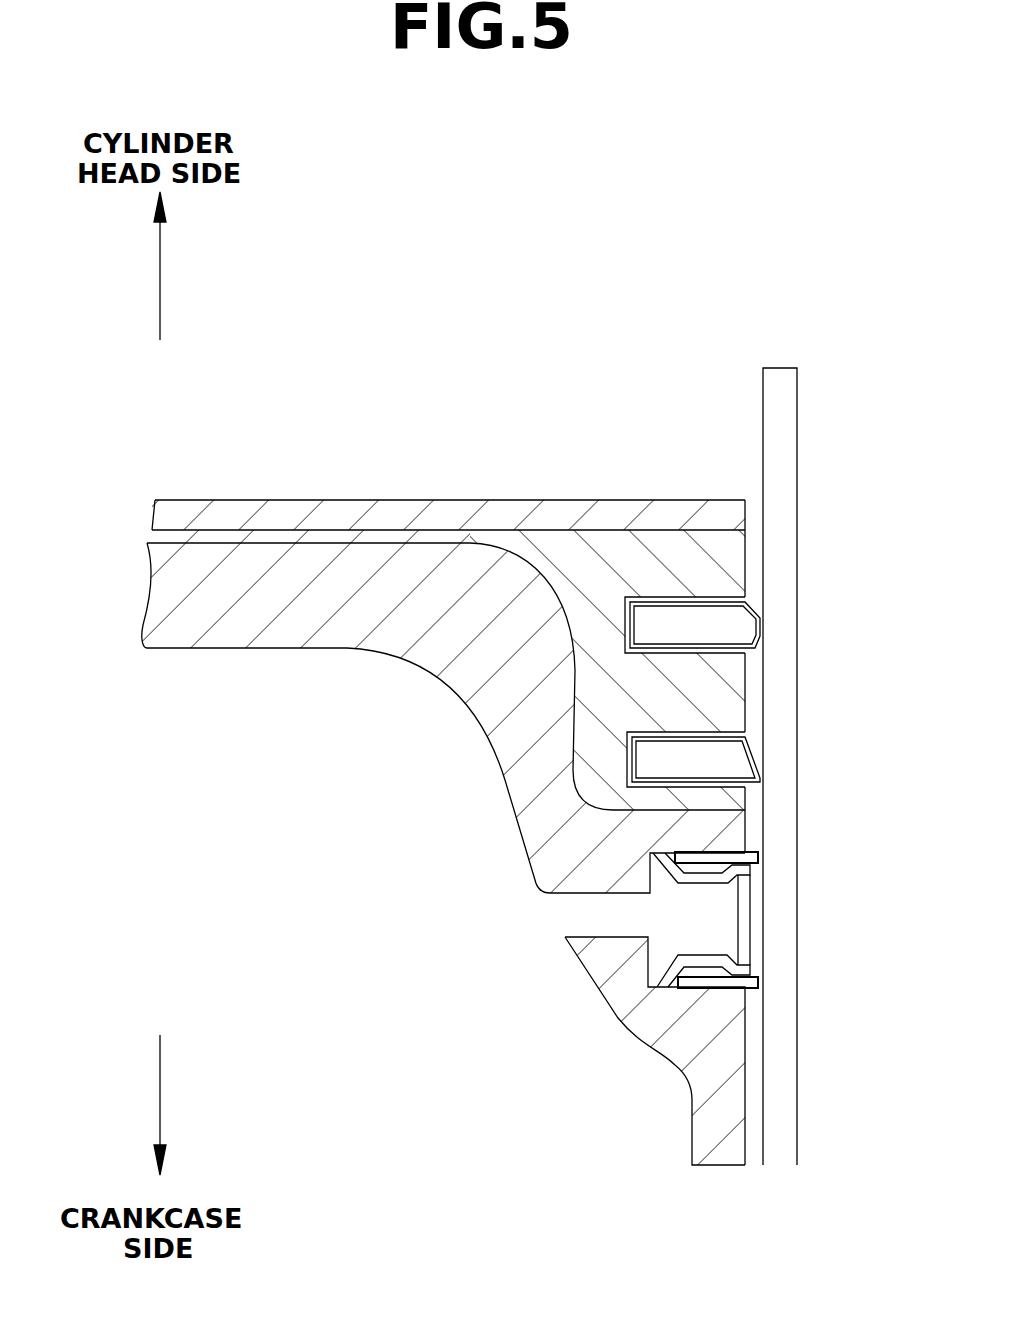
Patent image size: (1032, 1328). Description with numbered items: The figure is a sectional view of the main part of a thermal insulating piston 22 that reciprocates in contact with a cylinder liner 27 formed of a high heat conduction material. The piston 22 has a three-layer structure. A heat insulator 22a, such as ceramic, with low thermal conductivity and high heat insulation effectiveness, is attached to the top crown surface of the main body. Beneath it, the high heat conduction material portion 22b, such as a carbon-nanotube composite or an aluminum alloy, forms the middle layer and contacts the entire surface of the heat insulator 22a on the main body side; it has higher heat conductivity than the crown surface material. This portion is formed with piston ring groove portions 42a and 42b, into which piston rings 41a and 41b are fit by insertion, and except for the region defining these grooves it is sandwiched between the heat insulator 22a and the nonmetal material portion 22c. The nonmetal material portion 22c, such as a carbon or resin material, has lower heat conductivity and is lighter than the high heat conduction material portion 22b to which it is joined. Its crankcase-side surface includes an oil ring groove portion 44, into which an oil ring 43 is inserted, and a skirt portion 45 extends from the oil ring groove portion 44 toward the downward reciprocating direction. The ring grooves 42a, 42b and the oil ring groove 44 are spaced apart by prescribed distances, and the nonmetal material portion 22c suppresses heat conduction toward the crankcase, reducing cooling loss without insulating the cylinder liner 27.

The piston 22 is at (122, 432).
The heat insulator 22a is at (352, 513).
The high heat conduction material portion 22b is at (577, 553).
The nonmetal material portion 22c is at (593, 948).
The cylinder liner 27 is at (797, 430).
The piston ring 41a is at (745, 630).
The piston ring 41b is at (740, 752).
The piston ring groove portion 42a is at (623, 623).
The piston ring groove portion 42b is at (623, 763).
The oil ring 43 is at (752, 865).
The oil ring groove portion 44 is at (645, 972).
The skirt portion 45 is at (745, 1132).